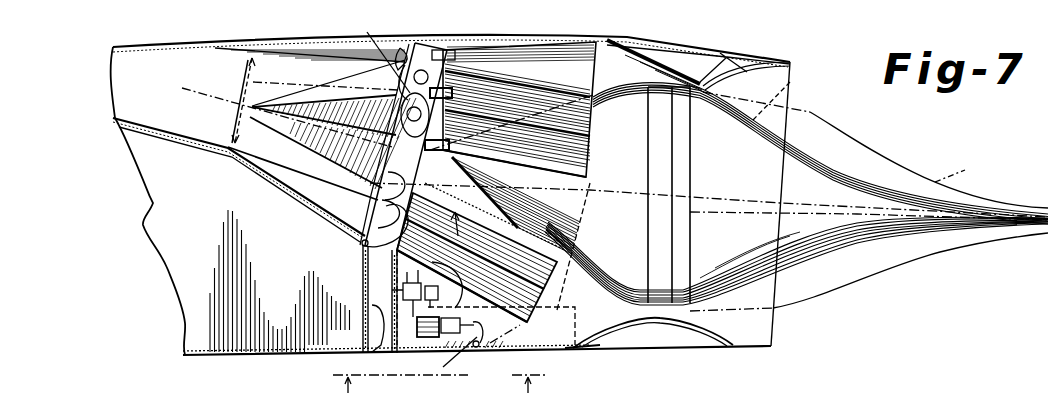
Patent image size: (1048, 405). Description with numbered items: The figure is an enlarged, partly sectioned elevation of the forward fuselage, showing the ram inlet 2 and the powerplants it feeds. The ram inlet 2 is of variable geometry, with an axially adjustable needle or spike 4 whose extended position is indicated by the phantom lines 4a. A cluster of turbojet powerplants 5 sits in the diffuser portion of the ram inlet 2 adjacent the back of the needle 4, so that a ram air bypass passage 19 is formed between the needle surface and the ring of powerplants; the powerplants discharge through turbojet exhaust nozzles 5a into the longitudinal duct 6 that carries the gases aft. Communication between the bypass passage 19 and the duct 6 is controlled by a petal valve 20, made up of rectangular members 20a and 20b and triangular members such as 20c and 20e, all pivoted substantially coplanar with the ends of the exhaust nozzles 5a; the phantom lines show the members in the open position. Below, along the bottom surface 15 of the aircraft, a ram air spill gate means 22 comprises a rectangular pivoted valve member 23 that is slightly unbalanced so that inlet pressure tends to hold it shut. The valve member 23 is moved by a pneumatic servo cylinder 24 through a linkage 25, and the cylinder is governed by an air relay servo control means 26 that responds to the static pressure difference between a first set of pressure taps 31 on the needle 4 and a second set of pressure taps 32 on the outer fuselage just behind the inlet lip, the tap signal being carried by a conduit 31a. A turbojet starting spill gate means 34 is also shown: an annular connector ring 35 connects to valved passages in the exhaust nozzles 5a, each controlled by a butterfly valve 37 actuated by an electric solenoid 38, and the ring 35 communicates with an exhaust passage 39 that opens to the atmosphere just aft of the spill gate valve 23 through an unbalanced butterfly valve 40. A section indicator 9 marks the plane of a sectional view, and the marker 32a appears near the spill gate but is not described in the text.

The ram inlet 2 is at (702, 347).
The needle or spike 4 is at (885, 185).
The phantom lines 4a is at (992, 170).
The turbojet powerplants 5 is at (580, 150).
The turbojet exhaust nozzles 5a is at (370, 54).
The longitudinal duct 6 is at (163, 87).
The section line 9 is at (437, 391).
The bottom surface 15 is at (229, 363).
The ram air bypass passage 19 is at (418, 221).
The petal valve 20 is at (370, 116).
The rectangular member 20a is at (380, 88).
The rectangular member 20b is at (372, 90).
The triangular member 20c is at (258, 112).
The triangular member 20e is at (252, 103).
The ram air spill gate means 22 is at (478, 350).
The pivoted valve member 23 is at (554, 330).
The pneumatic servo cylinder 24 is at (433, 338).
The linkage 25 is at (440, 385).
The air relay servo control means 26 is at (396, 294).
The first set of pressure taps 31 is at (1007, 224).
The conduit 31a is at (630, 204).
The second set of pressure taps 32 is at (753, 83).
The lower frame 32a is at (582, 350).
The turbo-jet starting spill gate means 34 is at (346, 256).
The annular connector ring 35 is at (428, 47).
The butterfly valve 37 is at (403, 146).
The electric solenoid 38 is at (470, 50).
The exhaust passage 39 is at (374, 308).
The unbalanced butterfly valve 40 is at (380, 352).